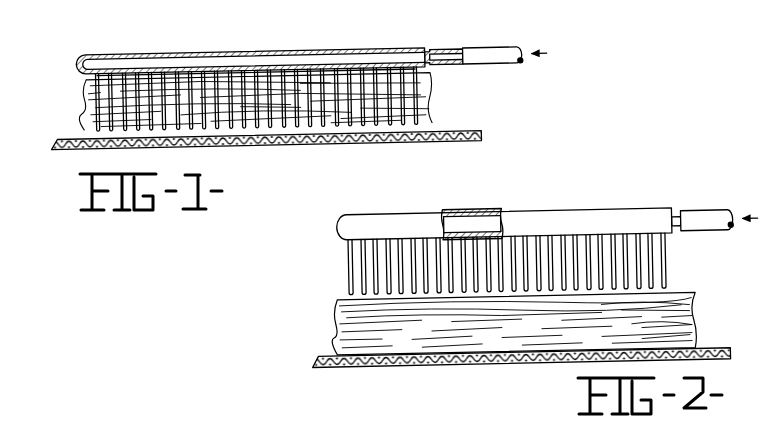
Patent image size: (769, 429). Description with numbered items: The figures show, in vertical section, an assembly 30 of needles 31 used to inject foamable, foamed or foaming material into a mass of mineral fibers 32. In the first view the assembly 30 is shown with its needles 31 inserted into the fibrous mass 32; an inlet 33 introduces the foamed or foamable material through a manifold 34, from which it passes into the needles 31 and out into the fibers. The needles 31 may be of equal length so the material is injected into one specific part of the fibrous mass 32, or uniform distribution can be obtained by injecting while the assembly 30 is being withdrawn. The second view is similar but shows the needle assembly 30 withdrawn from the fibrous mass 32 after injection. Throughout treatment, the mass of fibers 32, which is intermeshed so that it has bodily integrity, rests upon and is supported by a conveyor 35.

In FIG. 1, the assembly of needles 30 is at (72, 82).
In FIG. 2, the assembly of needles 30 is at (342, 248).
In FIG. 1, the needles 31 is at (397, 94).
In FIG. 2, the needles 31 is at (650, 252).
In FIG. 1, the mass of mineral fibers 32 is at (434, 118).
In FIG. 2, the mass of mineral fibers 32 is at (697, 310).
In FIG. 1, the inlet 33 is at (483, 46).
In FIG. 2, the inlet 33 is at (699, 210).
In FIG. 1, the manifold 34 is at (216, 52).
In FIG. 2, the manifold 34 is at (512, 211).
In FIG. 1, the conveyor 35 is at (63, 141).
In FIG. 2, the conveyor 35 is at (318, 354).